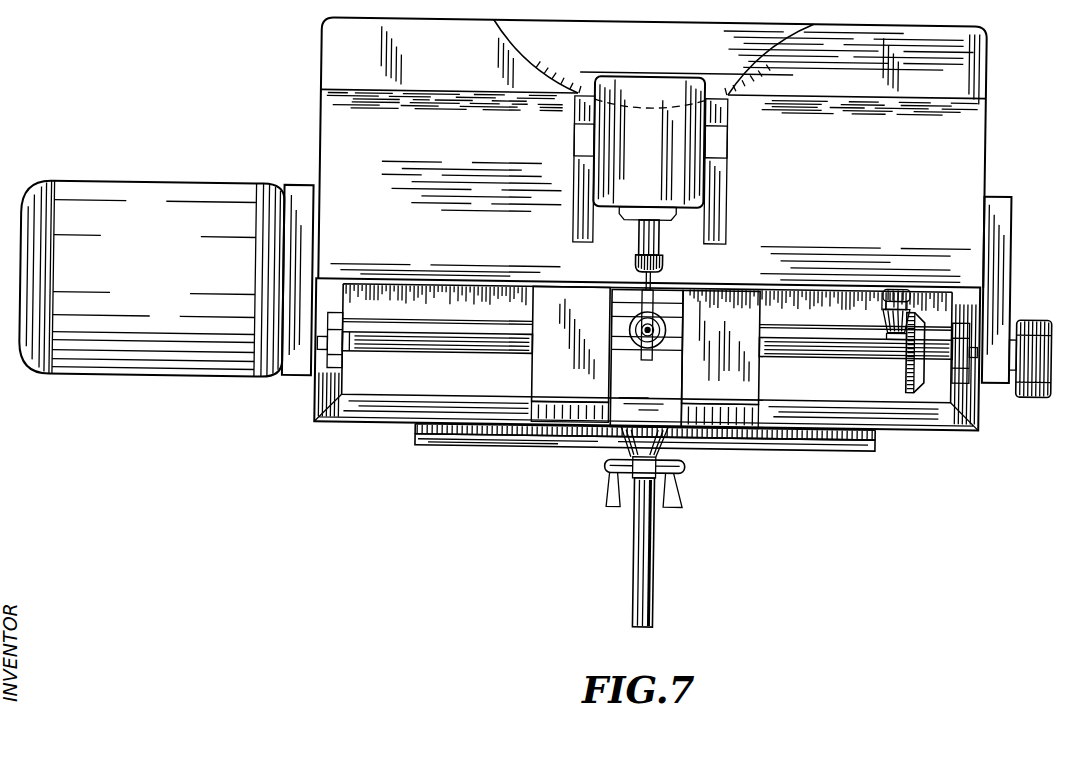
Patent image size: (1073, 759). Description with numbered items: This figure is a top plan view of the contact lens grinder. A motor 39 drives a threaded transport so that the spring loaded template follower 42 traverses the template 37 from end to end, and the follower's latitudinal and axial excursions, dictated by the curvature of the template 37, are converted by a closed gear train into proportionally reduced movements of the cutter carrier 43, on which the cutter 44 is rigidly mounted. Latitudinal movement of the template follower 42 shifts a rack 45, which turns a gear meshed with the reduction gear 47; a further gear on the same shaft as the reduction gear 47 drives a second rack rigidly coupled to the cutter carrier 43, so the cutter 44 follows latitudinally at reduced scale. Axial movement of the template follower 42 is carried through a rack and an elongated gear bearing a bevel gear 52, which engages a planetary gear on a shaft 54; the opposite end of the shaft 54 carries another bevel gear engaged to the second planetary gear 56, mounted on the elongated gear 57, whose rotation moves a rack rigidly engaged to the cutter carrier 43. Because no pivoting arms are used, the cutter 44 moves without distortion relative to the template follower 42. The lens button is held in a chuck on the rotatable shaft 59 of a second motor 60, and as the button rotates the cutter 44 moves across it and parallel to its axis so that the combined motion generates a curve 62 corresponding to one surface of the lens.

The template 37 is at (549, 43).
The motor 39 is at (160, 288).
The spring loaded template follower 42 is at (656, 572).
The cutter carrier 43 is at (659, 390).
The cutter 44 is at (655, 293).
The rack 45 is at (470, 440).
The reduction gear 47 is at (585, 444).
The bevel gear 52 is at (883, 322).
The shaft 54 is at (883, 299).
The second planetary gear 56 is at (907, 369).
The elongated gear 57 is at (438, 356).
The rotatable shaft 59 is at (638, 238).
The motor 60 is at (663, 176).
The curve 62 is at (638, 268).